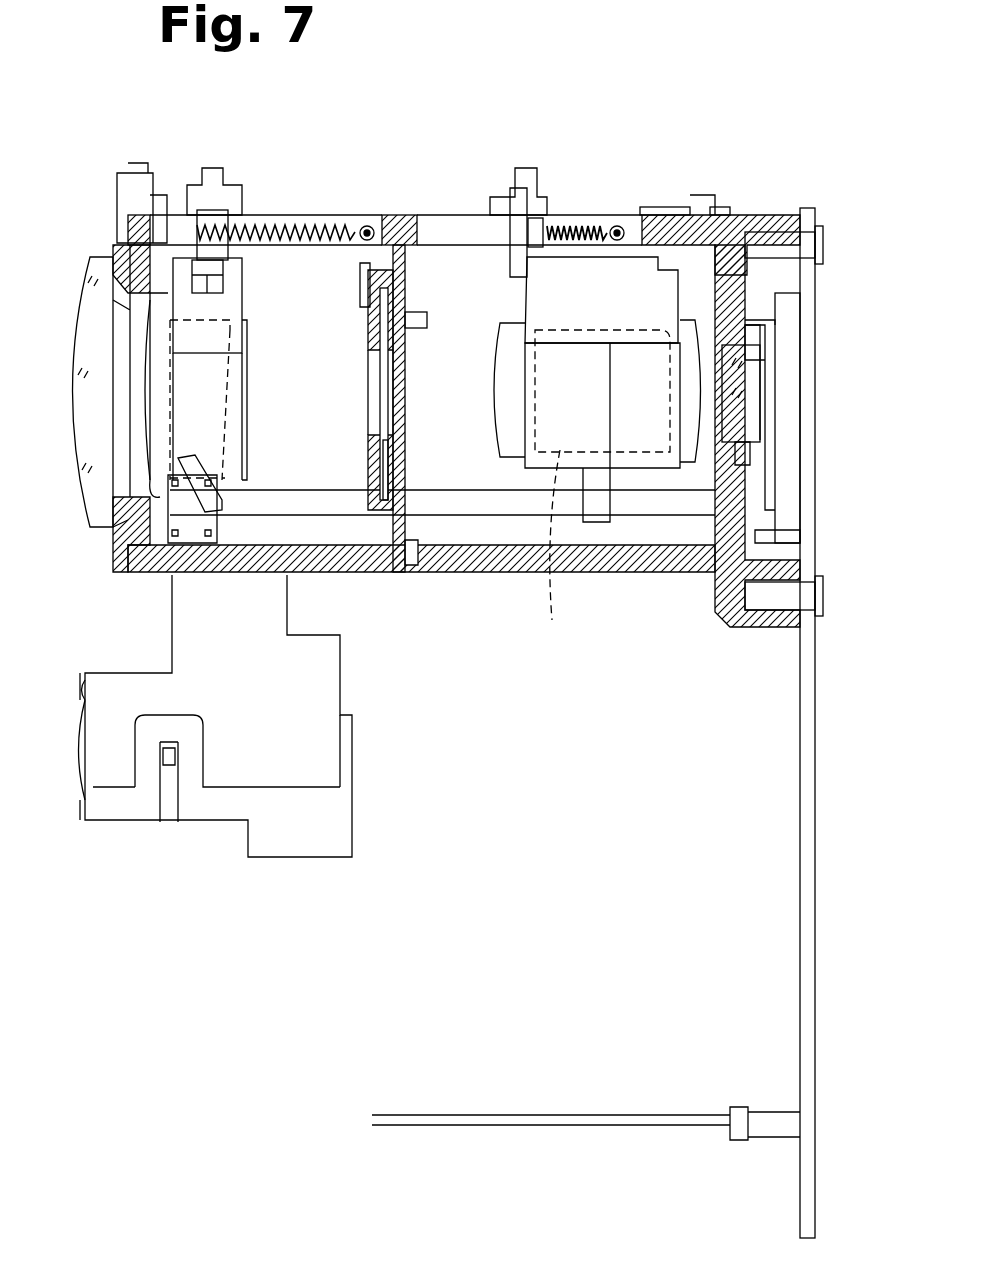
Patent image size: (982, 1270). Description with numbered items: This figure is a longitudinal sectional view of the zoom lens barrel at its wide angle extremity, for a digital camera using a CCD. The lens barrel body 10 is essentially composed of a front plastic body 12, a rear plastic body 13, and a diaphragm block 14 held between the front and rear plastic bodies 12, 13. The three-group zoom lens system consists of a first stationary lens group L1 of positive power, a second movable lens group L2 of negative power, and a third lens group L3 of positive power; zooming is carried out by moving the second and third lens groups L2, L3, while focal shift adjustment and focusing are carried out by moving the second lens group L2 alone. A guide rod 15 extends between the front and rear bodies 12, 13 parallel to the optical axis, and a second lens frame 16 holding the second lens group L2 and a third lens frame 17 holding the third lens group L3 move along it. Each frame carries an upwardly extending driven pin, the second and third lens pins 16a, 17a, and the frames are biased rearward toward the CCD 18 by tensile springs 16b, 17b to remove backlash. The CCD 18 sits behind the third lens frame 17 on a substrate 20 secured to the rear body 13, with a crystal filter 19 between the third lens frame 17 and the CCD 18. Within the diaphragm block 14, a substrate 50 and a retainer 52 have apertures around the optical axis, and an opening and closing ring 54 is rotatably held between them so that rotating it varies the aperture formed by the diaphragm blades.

The lens barrel body 10 is at (780, 170).
The front plastic body 12 is at (352, 575).
The rear plastic body 13 is at (665, 560).
The diaphragm block 14 is at (398, 575).
The guide rods 15 is at (490, 505).
The second lens frame 16 is at (238, 385).
The second lens pin 16a is at (214, 190).
The tensile spring 16b is at (322, 225).
The third lens frame 17 is at (531, 375).
The third lens pin 17a is at (527, 180).
The tensile spring 17b is at (588, 225).
The CCD 18 is at (790, 385).
The crystal filter 19 is at (745, 365).
The substrate 20 is at (808, 520).
The substrate 50 is at (405, 300).
The retainer 52 is at (380, 335).
The opening and closing ring 54 is at (400, 462).
The first stationary lens group L1 is at (76, 445).
The second movable lens group L2 is at (215, 420).
The third lens group L3 is at (531, 485).